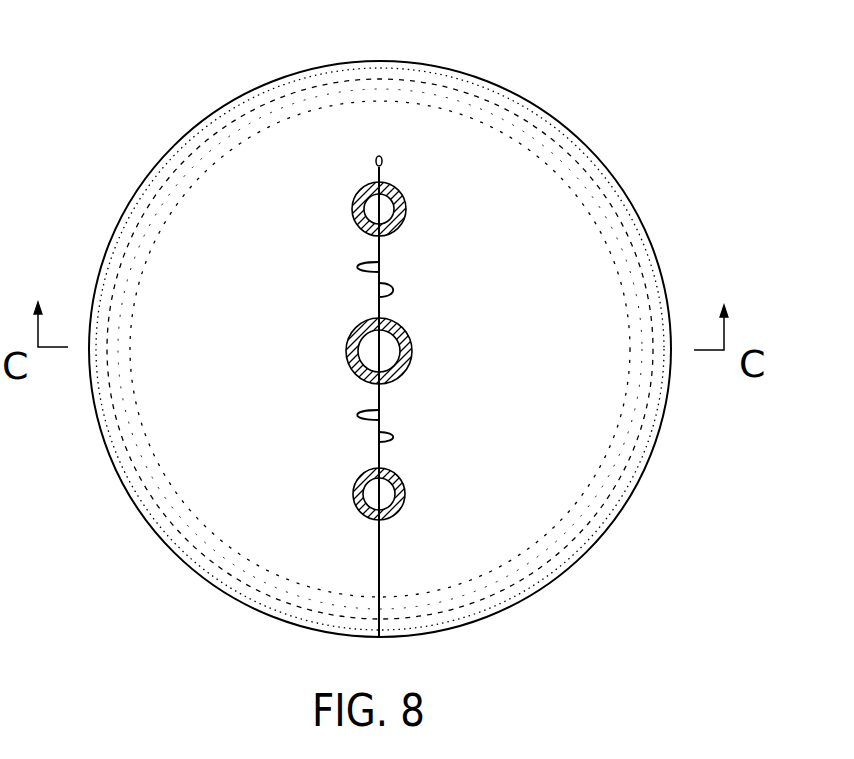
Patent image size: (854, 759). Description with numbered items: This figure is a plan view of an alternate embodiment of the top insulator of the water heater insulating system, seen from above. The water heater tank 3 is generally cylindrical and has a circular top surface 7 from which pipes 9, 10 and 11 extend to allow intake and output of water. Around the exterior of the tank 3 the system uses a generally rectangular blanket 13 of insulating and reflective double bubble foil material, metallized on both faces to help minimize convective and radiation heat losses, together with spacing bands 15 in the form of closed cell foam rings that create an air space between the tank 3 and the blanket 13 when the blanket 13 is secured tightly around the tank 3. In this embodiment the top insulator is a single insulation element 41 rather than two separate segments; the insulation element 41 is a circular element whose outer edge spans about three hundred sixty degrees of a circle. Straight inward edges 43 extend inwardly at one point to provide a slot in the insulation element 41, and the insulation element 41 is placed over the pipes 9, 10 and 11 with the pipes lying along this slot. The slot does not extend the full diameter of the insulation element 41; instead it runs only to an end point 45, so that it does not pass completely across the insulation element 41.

The water heater tank 3 is at (514, 167).
The circular top surface 7 is at (286, 150).
The pipe 9 is at (405, 493).
The pipe 10 is at (412, 351).
The pipe 11 is at (405, 207).
The blanket 13 is at (660, 403).
The spacing bands 15 is at (633, 266).
The insulation element 41 is at (548, 443).
The straight inward edges 43 is at (379, 262).
The end point 45 is at (392, 153).